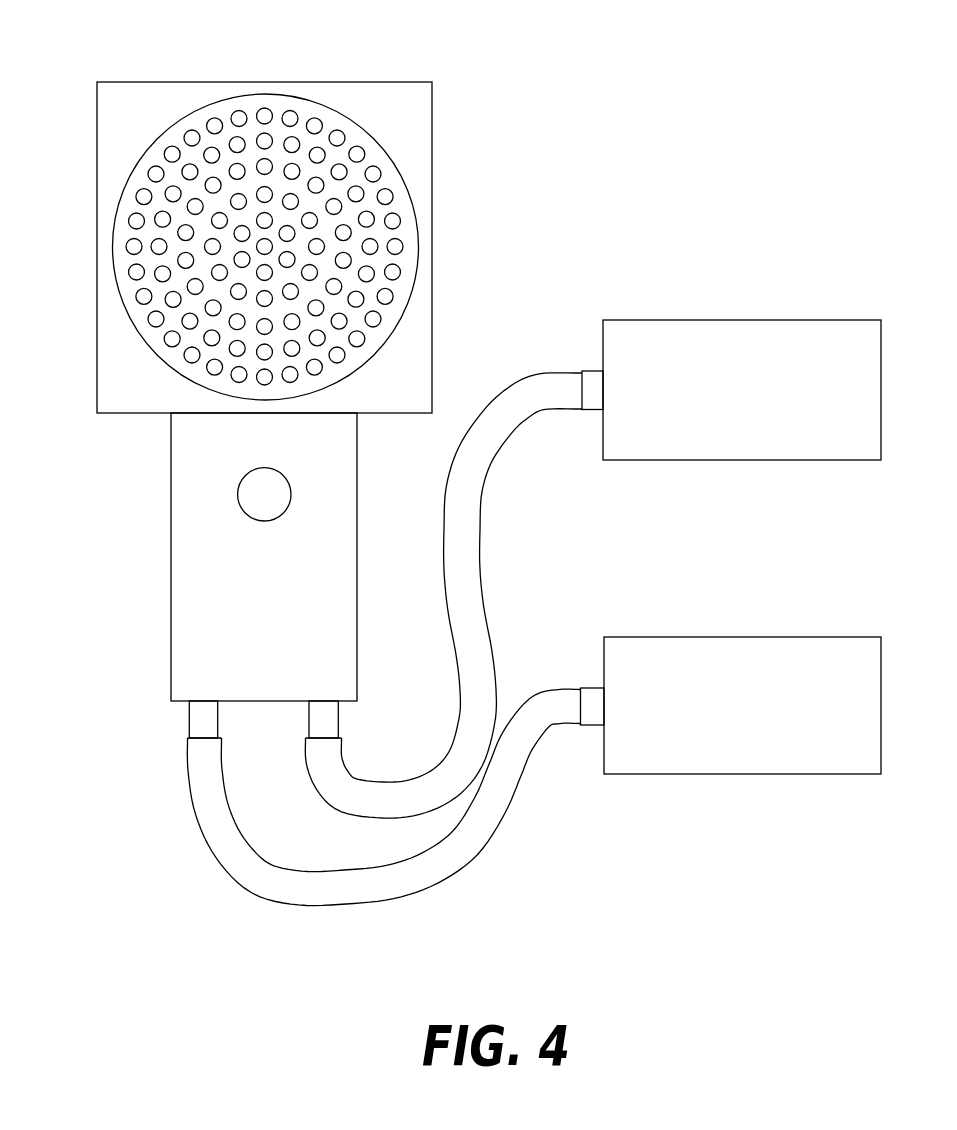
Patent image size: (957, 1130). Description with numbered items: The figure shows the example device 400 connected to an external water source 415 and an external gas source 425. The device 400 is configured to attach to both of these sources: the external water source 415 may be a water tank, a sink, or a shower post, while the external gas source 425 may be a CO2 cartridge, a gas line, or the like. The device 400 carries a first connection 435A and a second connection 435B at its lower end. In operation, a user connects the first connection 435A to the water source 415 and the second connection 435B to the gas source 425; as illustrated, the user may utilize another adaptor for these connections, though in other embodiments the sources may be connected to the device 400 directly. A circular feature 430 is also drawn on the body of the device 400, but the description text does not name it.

The device 400 is at (89, 64).
The external water source 415 is at (757, 398).
The external gas source 425 is at (757, 714).
The control button 430 is at (238, 483).
The first connection 435A is at (338, 728).
The second connection 435B is at (189, 730).